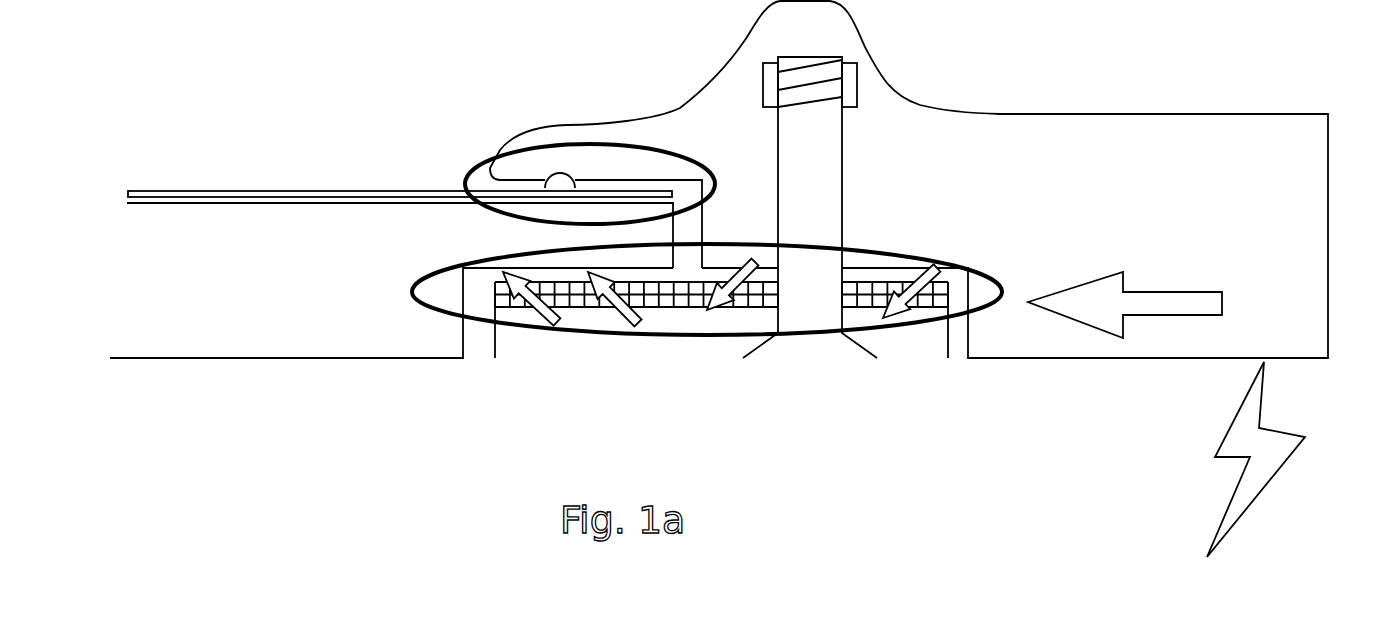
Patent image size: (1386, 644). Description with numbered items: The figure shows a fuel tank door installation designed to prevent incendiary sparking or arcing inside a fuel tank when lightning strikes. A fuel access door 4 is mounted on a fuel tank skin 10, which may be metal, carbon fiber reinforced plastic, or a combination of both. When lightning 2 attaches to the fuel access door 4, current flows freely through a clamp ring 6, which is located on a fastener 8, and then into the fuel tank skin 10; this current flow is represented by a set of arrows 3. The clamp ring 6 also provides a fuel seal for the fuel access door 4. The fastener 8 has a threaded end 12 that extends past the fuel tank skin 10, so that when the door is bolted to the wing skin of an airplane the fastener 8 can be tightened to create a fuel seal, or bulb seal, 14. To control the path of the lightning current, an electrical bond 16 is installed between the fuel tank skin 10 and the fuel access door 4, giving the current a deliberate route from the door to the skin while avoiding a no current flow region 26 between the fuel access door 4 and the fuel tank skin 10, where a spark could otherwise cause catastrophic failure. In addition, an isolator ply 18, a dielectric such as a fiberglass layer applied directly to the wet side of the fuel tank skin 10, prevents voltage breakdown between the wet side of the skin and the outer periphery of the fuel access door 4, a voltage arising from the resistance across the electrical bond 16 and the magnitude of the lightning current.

The lightning 2 is at (1258, 472).
The arrows 3 is at (909, 276).
The fuel access door 4 is at (1317, 273).
The clamp ring 6 is at (833, 350).
The fastener 8 is at (833, 155).
The fuel tank skin 10 is at (137, 277).
The threaded end 12 is at (845, 77).
The fuel seal 14 is at (548, 172).
The electrical bond 16 is at (613, 340).
The isolator ply 18 is at (298, 187).
The no current flow region 26 is at (560, 140).